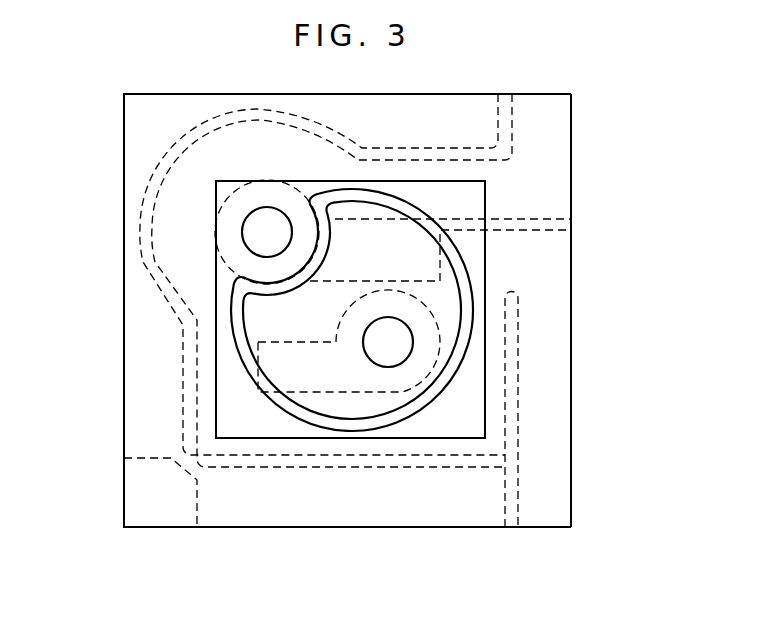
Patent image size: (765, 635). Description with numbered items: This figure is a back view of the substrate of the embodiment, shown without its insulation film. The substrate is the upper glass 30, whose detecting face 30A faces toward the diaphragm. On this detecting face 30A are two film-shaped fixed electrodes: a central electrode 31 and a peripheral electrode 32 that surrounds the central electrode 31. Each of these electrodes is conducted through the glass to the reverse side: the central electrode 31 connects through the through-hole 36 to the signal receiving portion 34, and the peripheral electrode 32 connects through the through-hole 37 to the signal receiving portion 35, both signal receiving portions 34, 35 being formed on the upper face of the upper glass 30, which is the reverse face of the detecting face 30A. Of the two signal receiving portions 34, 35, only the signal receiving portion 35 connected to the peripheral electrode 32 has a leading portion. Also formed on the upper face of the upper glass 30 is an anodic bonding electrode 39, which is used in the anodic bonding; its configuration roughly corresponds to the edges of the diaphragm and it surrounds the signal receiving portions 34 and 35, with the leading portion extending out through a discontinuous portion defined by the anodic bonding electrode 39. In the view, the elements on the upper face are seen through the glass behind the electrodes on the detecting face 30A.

The upper glass 30 is at (571, 136).
The detecting face 30A is at (558, 390).
The central electrode 31 is at (447, 293).
The peripheral electrode 32 is at (472, 198).
The signal receiving portion 34 is at (287, 366).
The signal receiving portion 35 is at (230, 207).
The through-hole 36 is at (394, 364).
The through-hole 37 is at (251, 250).
The anodic bonding electrode 39 is at (183, 354).